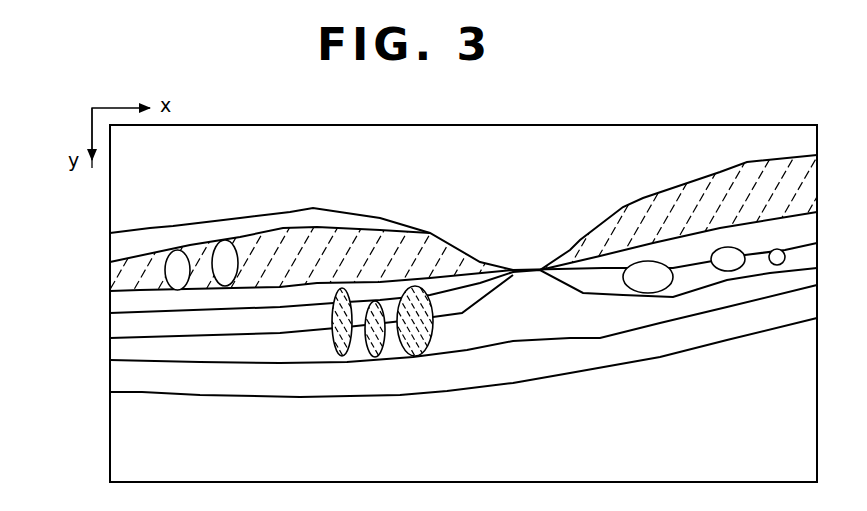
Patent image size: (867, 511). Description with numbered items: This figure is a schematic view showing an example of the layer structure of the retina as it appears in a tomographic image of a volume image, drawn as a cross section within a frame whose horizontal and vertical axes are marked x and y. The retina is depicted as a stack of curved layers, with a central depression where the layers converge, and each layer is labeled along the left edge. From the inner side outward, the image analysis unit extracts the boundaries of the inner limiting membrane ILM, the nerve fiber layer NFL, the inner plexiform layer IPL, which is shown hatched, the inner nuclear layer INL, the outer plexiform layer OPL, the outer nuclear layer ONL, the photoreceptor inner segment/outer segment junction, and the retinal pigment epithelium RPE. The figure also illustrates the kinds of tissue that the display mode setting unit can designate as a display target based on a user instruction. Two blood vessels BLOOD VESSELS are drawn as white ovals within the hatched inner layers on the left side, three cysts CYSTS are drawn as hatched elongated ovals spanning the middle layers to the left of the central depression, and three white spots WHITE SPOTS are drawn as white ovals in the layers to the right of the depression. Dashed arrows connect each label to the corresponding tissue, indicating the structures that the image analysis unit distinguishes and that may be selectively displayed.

The inner limiting membrane ILM is at (150, 228).
The nerve fiber layer NFL is at (123, 247).
The inner plexiform layer IPL is at (123, 275).
The inner nuclear layer INL is at (123, 300).
The outer plexiform layer OPL is at (123, 327).
The outer nuclear layer ONL is at (123, 348).
The retinal pigment epithelium RPE is at (142, 392).
The blood vessels BLOOD VESSELS is at (225, 240).
The cysts CYSTS is at (412, 363).
The white spots WHITE SPOTS is at (773, 270).